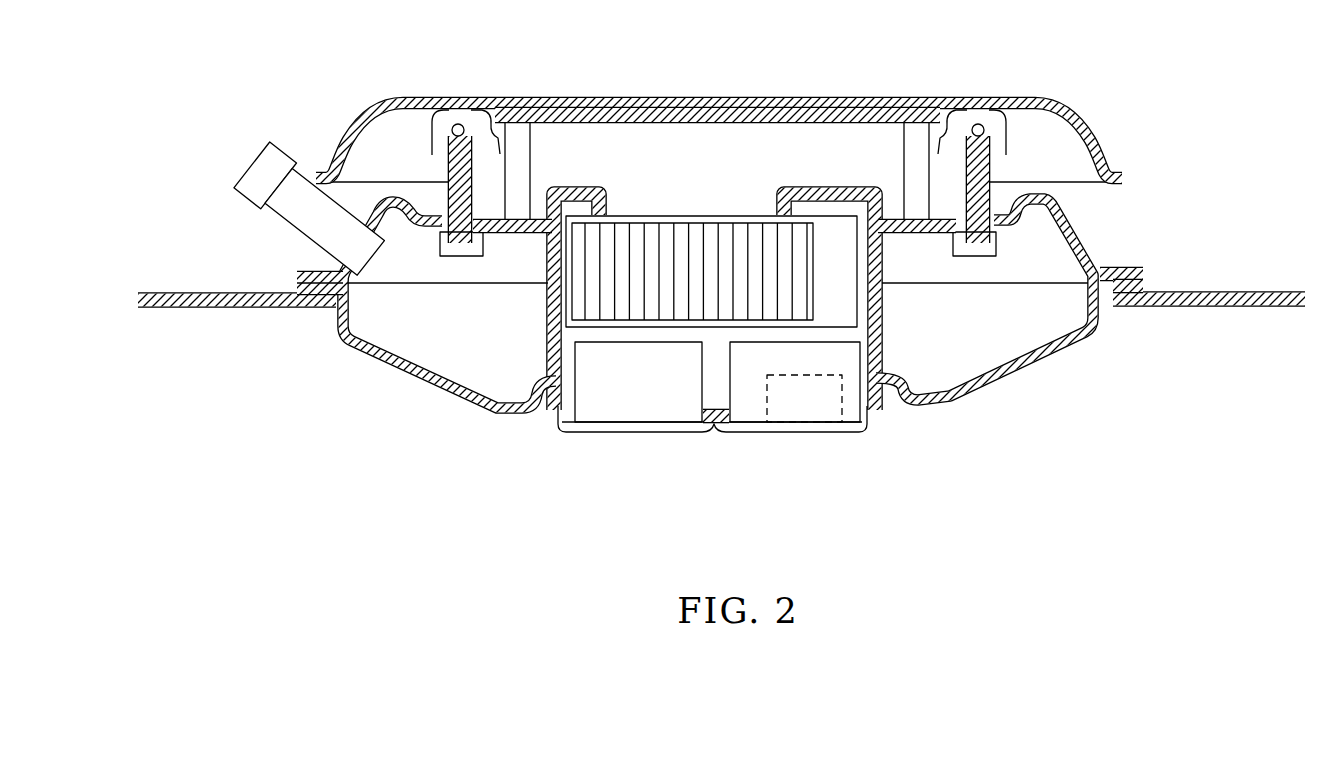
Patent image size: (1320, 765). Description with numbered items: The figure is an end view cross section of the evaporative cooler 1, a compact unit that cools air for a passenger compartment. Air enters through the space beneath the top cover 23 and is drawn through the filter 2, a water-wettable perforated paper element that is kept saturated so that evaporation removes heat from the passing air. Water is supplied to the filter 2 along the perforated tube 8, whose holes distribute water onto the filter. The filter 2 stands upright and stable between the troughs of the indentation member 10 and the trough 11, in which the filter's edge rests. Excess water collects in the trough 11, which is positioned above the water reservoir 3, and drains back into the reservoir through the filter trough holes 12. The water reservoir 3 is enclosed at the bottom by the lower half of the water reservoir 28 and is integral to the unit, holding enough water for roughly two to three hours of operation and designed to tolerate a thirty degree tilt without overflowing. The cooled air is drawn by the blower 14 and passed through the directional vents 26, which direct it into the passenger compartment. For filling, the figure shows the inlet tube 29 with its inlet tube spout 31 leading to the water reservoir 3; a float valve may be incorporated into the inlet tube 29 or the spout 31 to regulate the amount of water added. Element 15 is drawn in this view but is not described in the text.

The evaporative cooler 1 is at (665, 72).
The filter 2 is at (446, 168).
The water reservoir 3 is at (447, 348).
The perforated tube 8 is at (455, 125).
The indentation member 10 is at (663, 110).
The trough 11 is at (440, 250).
The filter trough holes 12 is at (465, 252).
The blower 14 is at (810, 305).
The sensor 15 is at (784, 410).
The top cover 23 is at (833, 98).
The directional vents 26 is at (655, 433).
The lower half of the water reservoir 28 is at (1005, 378).
The inlet tube 29 is at (298, 219).
The inlet tube spout 31 is at (255, 170).